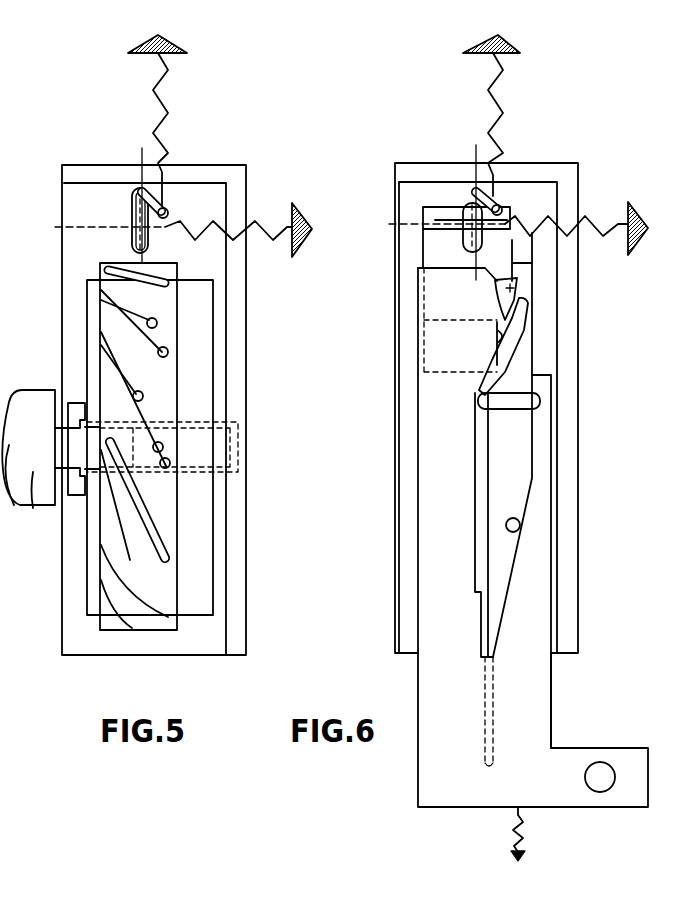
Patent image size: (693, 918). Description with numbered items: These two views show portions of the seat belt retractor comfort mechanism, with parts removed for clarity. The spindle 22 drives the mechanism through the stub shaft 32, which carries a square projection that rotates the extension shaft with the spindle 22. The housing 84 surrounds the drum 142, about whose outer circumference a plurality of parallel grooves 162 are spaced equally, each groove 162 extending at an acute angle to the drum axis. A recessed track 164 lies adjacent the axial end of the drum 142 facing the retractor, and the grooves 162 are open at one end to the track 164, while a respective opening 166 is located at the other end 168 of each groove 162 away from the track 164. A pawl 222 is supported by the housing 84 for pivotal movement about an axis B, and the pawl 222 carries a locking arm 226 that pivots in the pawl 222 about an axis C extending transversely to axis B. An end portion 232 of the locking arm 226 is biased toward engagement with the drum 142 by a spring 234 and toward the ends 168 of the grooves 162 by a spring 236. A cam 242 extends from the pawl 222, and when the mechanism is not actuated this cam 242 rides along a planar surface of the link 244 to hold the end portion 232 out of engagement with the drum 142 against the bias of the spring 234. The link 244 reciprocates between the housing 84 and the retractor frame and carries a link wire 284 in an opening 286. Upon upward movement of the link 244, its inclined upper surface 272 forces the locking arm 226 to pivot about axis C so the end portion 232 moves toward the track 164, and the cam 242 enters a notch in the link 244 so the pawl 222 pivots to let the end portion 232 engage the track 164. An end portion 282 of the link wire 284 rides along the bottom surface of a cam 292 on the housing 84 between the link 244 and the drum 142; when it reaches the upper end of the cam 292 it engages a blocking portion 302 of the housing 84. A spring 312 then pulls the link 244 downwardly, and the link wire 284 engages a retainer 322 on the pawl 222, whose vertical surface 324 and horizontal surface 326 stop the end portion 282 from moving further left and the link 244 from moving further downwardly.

In FIG. 5, the spindle 22 is at (33, 474).
In FIG. 5, the stub shaft 32 is at (62, 482).
In FIG. 5, the housing 84 is at (205, 172).
In FIG. 5, the drum 142 is at (180, 303).
In FIG. 5, the grooves 162 is at (158, 324).
In FIG. 5, the recessed track 164 is at (95, 584).
In FIG. 5, the opening 166 is at (168, 352).
In FIG. 5, the end of groove 168 is at (167, 358).
In FIG. 5, the locking arm 226 is at (131, 205).
In FIG. 5, the end portion of locking arm 232 is at (130, 241).
In FIG. 5, the spring 234 is at (164, 97).
In FIG. 6, the spring 234 is at (498, 98).
In FIG. 5, the spring 236 is at (288, 233).
In FIG. 6, the pawl 222 is at (423, 297).
In FIG. 6, the cam 242 is at (453, 372).
In FIG. 6, the link 244 is at (520, 696).
In FIG. 6, the inclined upper surface 272 is at (520, 298).
In FIG. 6, the end portion of link wire 282 is at (525, 405).
In FIG. 6, the link wire 284 is at (497, 437).
In FIG. 6, the opening 286 is at (520, 525).
In FIG. 6, the cam 292 is at (520, 333).
In FIG. 6, the blocking portion 302 is at (522, 282).
In FIG. 6, the spring 312 is at (523, 831).
In FIG. 6, the retainer 322 is at (492, 356).
In FIG. 6, the vertical surface 324 is at (493, 338).
In FIG. 6, the horizontal surface 326 is at (522, 340).
In FIG. 5, the axis B is at (77, 226).
In FIG. 6, the axis B is at (401, 222).
In FIG. 5, the axis C is at (139, 158).
In FIG. 6, the axis C is at (473, 164).